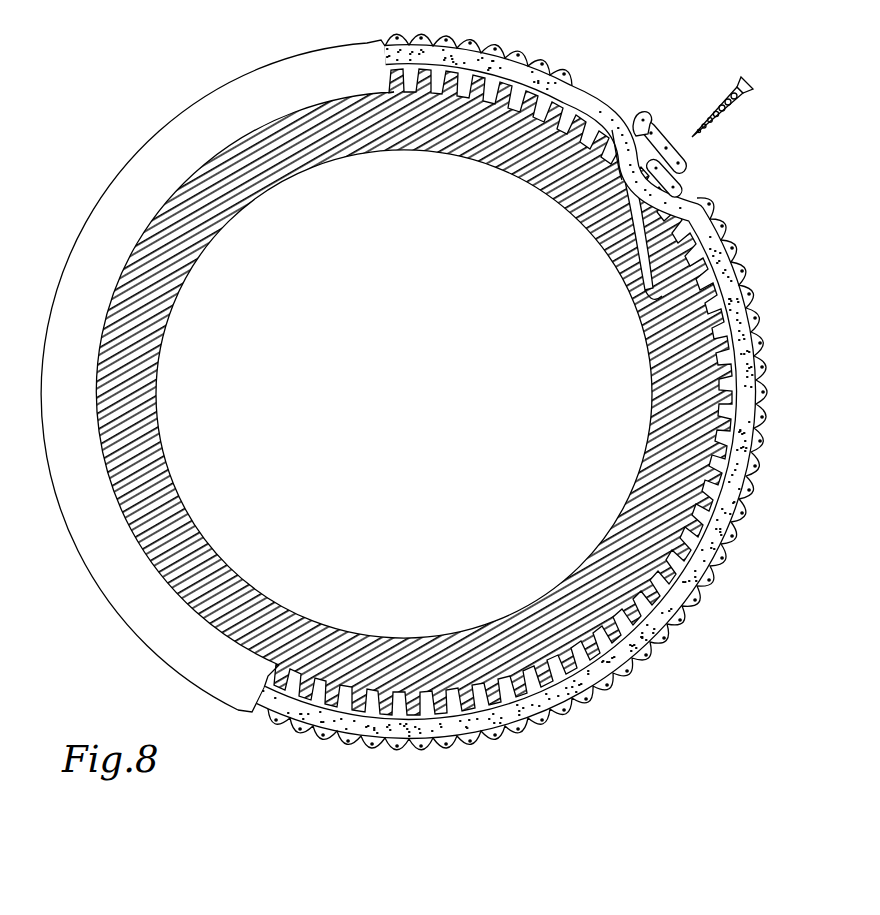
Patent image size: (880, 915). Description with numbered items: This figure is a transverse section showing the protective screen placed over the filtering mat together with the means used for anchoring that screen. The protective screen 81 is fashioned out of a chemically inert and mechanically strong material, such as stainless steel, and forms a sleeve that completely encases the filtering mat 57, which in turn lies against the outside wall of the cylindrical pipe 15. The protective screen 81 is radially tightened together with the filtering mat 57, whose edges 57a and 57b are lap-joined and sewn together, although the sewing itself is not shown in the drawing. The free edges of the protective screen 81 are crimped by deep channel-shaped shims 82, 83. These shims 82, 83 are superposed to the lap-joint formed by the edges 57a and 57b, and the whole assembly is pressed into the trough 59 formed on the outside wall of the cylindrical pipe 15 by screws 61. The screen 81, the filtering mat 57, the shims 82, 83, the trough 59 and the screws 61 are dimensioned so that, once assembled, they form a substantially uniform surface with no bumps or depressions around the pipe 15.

The cylindrical pipe 15 is at (637, 497).
The filtering mat 57 is at (718, 568).
The edge of the filtering mat 57a is at (645, 275).
The edge of the filtering mat 57b is at (600, 210).
The trough 59 is at (625, 248).
The screw 61 is at (733, 102).
The protective screen 81 is at (762, 322).
The channel-shaped shim 82 is at (644, 114).
The channel-shaped shim 83 is at (688, 184).